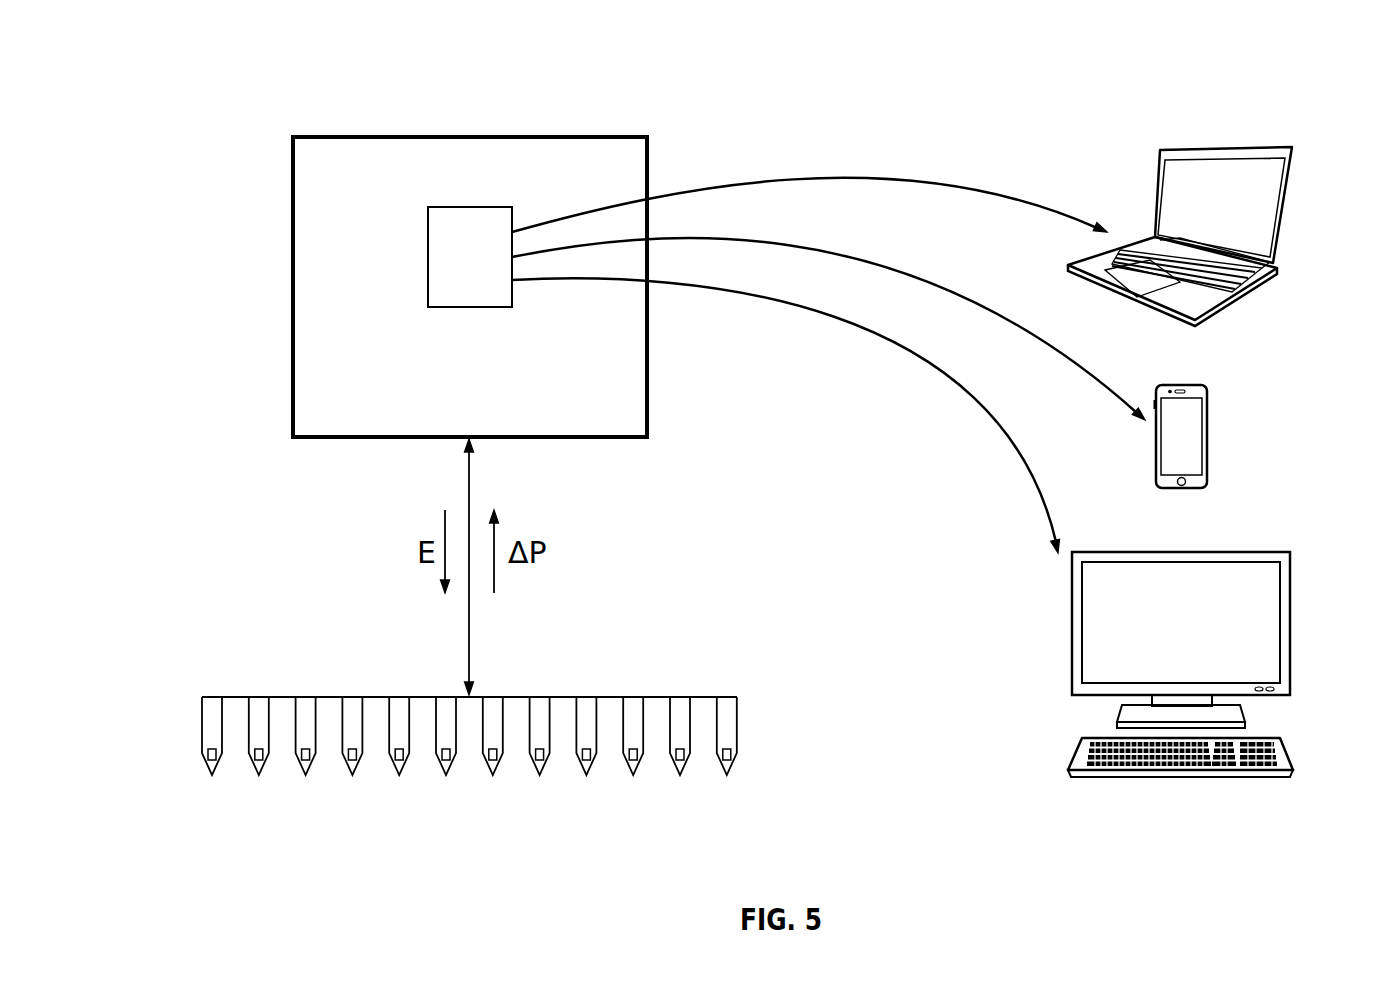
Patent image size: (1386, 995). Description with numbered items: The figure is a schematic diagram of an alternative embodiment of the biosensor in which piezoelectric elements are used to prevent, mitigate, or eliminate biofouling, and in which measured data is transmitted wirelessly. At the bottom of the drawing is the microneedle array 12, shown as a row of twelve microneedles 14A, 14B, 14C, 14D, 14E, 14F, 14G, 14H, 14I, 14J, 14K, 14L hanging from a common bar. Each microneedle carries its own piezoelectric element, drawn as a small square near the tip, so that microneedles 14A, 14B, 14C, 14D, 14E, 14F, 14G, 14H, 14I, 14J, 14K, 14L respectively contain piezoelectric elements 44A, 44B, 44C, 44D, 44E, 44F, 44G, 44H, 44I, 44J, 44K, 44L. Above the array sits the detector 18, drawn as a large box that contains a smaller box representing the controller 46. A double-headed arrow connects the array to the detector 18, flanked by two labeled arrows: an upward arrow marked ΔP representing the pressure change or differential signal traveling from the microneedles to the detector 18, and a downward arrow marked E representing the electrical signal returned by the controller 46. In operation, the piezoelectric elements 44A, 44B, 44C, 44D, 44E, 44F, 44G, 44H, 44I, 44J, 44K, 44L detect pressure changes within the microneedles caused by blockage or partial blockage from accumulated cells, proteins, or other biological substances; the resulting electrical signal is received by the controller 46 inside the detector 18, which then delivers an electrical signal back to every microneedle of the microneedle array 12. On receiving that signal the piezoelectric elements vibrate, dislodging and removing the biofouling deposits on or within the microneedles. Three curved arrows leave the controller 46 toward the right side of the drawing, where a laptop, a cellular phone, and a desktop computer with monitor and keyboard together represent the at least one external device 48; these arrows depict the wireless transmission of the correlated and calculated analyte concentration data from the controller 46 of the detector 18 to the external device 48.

The microneedle array 12 is at (173, 729).
The microneedle 14A is at (212, 777).
The microneedle 14B is at (259, 777).
The microneedle 14C is at (306, 777).
The microneedle 14D is at (352, 777).
The microneedle 14E is at (399, 777).
The microneedle 14F is at (446, 777).
The microneedle 14G is at (493, 777).
The microneedle 14H is at (540, 777).
The microneedle 14I is at (586, 777).
The microneedle 14J is at (633, 777).
The microneedle 14K is at (680, 777).
The microneedle 14L is at (727, 777).
The detector 18 is at (293, 186).
The piezoelectric element 44A is at (209, 749).
The piezoelectric element 44B is at (256, 749).
The piezoelectric element 44C is at (303, 749).
The piezoelectric element 44D is at (350, 749).
The piezoelectric element 44E is at (397, 749).
The piezoelectric element 44F is at (444, 749).
The piezoelectric element 44G is at (495, 749).
The piezoelectric element 44H is at (542, 749).
The piezoelectric element 44I is at (589, 749).
The piezoelectric element 44J is at (636, 749).
The piezoelectric element 44K is at (682, 749).
The piezoelectric element 44L is at (729, 749).
The controller 46 is at (466, 232).
The external device 48 is at (1294, 450).